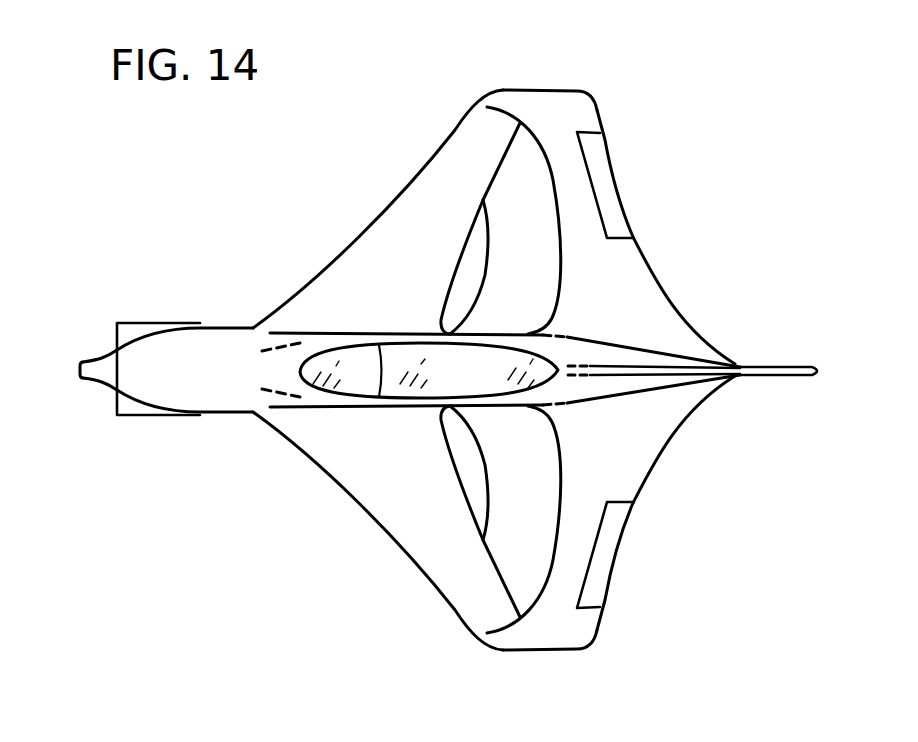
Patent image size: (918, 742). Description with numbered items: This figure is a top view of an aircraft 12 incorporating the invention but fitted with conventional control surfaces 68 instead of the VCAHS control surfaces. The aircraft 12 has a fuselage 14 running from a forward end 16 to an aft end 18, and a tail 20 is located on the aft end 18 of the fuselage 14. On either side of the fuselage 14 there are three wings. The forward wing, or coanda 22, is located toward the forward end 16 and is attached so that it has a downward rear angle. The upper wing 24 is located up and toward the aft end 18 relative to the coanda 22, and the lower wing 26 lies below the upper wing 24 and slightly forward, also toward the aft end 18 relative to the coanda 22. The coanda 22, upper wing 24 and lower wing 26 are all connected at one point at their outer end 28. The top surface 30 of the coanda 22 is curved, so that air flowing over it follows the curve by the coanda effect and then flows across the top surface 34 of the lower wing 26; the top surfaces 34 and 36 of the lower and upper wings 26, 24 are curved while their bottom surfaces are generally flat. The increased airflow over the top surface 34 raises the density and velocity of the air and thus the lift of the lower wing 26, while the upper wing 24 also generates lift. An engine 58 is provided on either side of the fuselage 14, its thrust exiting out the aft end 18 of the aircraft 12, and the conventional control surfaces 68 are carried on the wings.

The aircraft 12 is at (177, 193).
The fuselage 14 is at (202, 405).
The forward end 16 is at (78, 368).
The aft end 18 is at (737, 380).
The tail 20 is at (787, 363).
The coanda 22 is at (330, 272).
The upper wing 24 is at (655, 280).
The lower wing 26 is at (483, 260).
The outer end 28 is at (538, 92).
The top surface of the coanda 30 is at (392, 252).
The top surface of the lower wing 34 is at (520, 217).
The top surface of the upper wing 36 is at (587, 275).
The engine 58 is at (122, 328).
The conventional control surfaces 68 is at (600, 183).